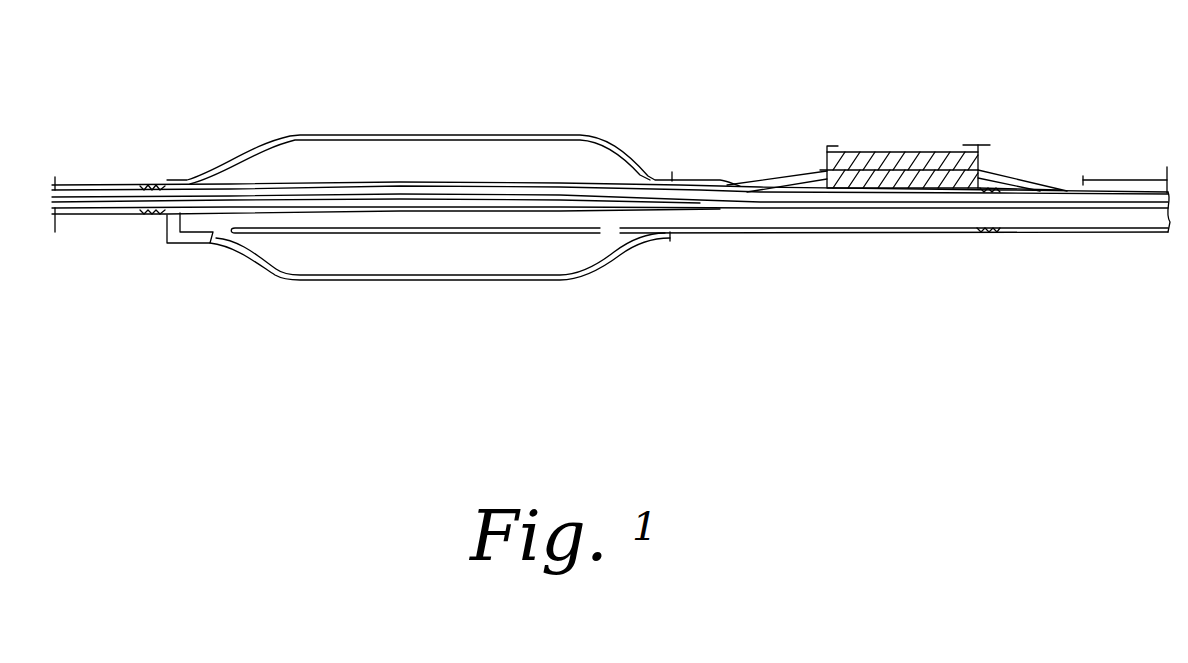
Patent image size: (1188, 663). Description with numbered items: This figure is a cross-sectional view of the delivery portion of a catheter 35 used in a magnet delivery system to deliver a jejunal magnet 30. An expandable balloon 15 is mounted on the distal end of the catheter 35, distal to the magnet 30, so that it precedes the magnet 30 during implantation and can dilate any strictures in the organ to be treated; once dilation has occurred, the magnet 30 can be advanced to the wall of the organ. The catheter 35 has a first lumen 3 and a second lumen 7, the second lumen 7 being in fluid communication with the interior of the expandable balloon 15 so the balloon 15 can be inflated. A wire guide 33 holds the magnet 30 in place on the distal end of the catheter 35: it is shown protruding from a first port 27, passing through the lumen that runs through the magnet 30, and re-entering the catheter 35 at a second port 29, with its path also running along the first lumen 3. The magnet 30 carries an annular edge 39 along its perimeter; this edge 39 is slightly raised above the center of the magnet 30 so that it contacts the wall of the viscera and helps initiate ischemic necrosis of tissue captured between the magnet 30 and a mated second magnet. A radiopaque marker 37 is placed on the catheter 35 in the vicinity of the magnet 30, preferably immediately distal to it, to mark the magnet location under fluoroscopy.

The first lumen 3 is at (233, 190).
The second lumen 7 is at (458, 218).
The expandable balloon 15 is at (417, 101).
The first port 27 is at (1080, 175).
The second port 29 is at (735, 183).
The jejunal magnet 30 is at (890, 140).
The wire guide 33 is at (1023, 163).
The catheter 35 is at (857, 262).
The radiopaque marker 37 is at (153, 187).
The annular edge 39 is at (970, 145).